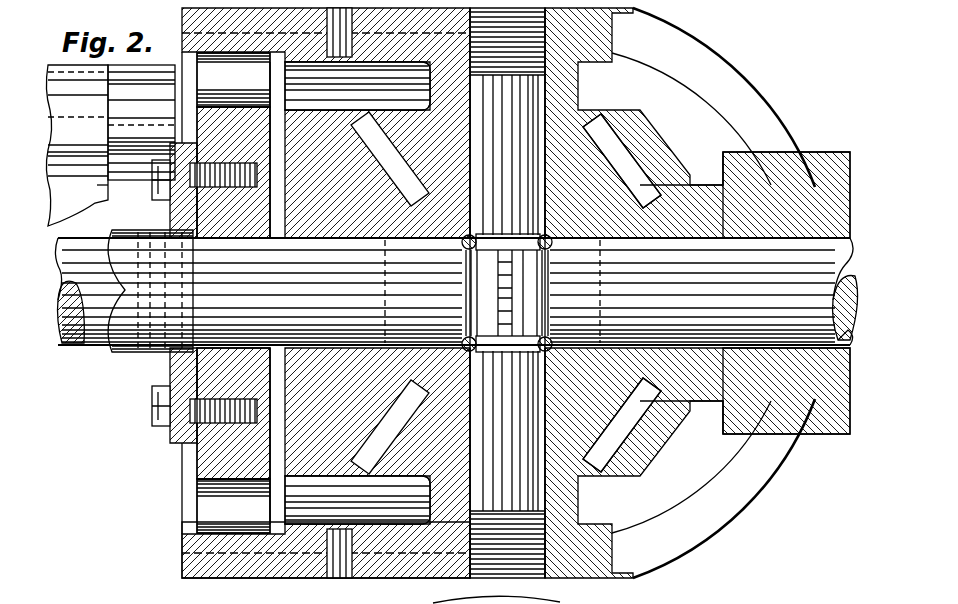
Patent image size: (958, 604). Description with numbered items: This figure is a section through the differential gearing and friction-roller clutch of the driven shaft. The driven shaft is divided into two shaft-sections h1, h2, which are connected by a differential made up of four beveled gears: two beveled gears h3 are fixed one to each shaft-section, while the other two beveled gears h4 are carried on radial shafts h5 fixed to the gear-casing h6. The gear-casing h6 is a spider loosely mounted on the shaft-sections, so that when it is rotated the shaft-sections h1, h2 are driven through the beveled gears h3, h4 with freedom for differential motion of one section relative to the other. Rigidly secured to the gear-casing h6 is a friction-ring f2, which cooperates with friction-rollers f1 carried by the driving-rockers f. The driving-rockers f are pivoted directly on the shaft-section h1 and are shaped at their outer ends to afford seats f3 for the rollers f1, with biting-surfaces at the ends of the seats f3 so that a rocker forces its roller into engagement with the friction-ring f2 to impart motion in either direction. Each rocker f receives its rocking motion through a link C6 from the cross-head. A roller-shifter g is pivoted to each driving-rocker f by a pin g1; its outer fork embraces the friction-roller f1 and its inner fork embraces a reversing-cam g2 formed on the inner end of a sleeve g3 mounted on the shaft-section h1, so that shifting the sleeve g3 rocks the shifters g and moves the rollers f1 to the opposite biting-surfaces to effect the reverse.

The shaft-section h1 is at (97, 208).
The roller-shifter g is at (165, 142).
The link C6 is at (97, 188).
The sleeve g3 is at (150, 254).
The reversing-cam g2 is at (177, 284).
The pin g1 is at (258, 160).
The friction-roller f1 is at (197, 96).
The roller-seat f3 is at (276, 293).
The driving-rocker f is at (263, 148).
The friction-ring f2 is at (190, 566).
The radial shaft h5 is at (533, 107).
The beveled gear h4 is at (638, 131).
The beveled gear h3 is at (687, 187).
The shaft-section h2 is at (791, 254).
The gear-casing h6 is at (752, 60).